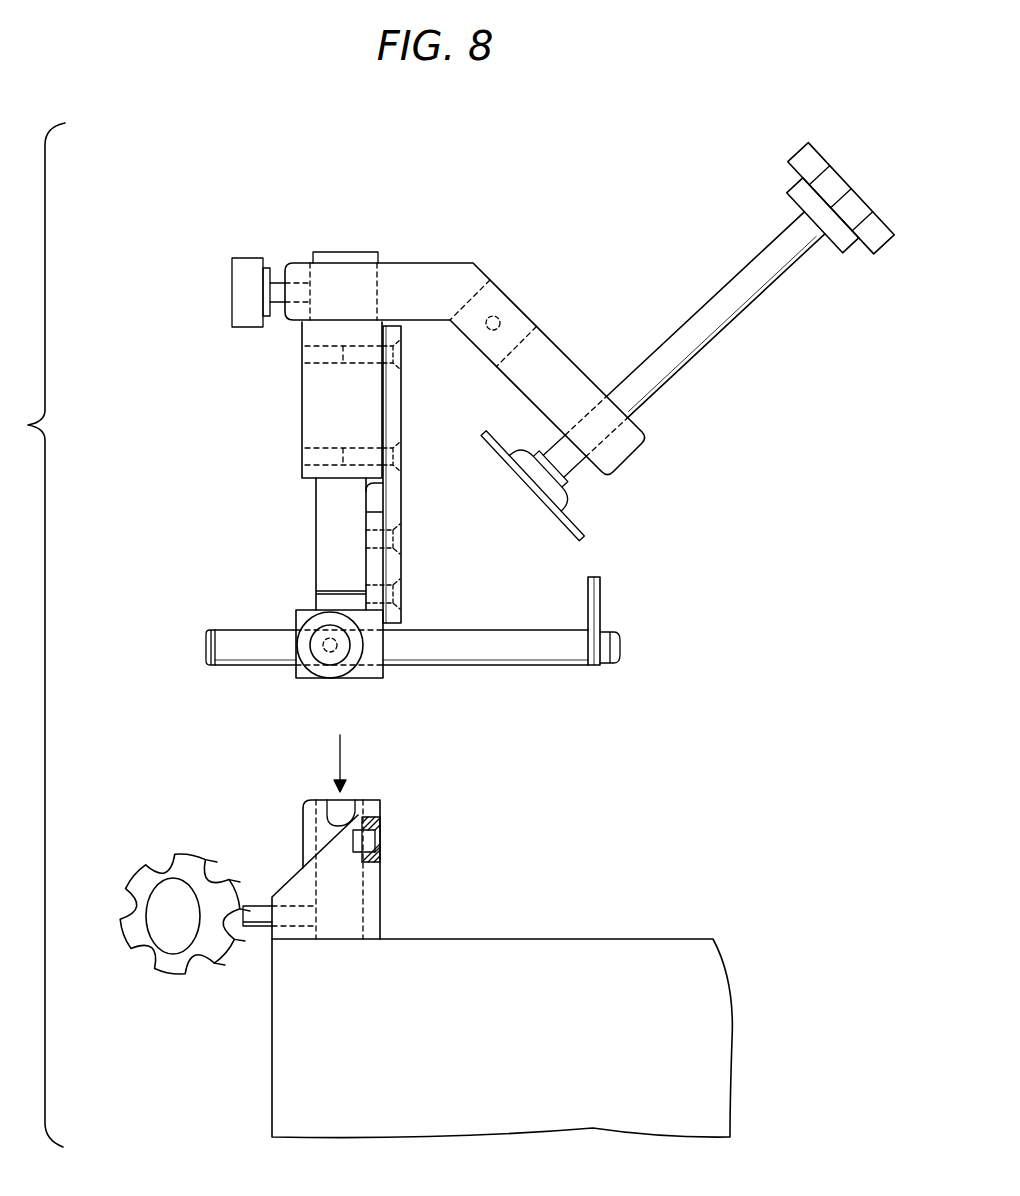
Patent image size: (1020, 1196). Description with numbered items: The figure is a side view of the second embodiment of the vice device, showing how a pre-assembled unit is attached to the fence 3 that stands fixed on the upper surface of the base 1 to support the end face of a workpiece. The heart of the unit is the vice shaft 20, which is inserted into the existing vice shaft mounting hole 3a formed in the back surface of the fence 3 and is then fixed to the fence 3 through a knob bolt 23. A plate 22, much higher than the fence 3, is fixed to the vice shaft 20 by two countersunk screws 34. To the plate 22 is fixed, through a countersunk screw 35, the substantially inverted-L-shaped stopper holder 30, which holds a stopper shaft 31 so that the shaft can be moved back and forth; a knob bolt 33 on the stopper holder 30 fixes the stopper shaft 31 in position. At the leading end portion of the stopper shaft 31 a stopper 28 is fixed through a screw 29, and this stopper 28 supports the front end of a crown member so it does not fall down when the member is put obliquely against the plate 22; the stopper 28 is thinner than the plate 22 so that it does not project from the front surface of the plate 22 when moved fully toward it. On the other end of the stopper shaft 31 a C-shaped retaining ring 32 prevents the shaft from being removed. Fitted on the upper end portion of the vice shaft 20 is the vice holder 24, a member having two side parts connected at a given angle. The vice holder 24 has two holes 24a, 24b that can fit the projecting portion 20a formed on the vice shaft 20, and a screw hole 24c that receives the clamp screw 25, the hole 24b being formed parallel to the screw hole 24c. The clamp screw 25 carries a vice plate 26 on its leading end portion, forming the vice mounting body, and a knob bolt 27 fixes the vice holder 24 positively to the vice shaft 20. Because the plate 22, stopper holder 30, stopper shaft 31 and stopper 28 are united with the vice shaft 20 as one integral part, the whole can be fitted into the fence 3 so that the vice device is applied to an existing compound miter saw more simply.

The base 1 is at (640, 939).
The fence 3 is at (302, 848).
The vice shaft mounting hole 3a is at (310, 822).
The vice shaft 20 is at (302, 388).
The projecting portion 20a is at (360, 252).
The plate 22 is at (401, 395).
The knob bolt 23 is at (160, 870).
The vice holder 24 is at (449, 262).
The hole 24a is at (312, 270).
The hole 24b is at (523, 330).
The screw hole 24c is at (603, 440).
The clamp screw 25 is at (718, 276).
The vice plate 26 is at (563, 500).
The knob bolt 27 is at (248, 258).
The stopper 28 is at (596, 667).
The screw 29 is at (618, 668).
The stopper holder 30 is at (300, 678).
The stopper shaft 31 is at (503, 667).
The C-shaped retaining ring 32 is at (213, 667).
The knob bolt 33 is at (340, 678).
The countersunk screws 34 is at (395, 460).
The countersunk screw 35 is at (395, 587).